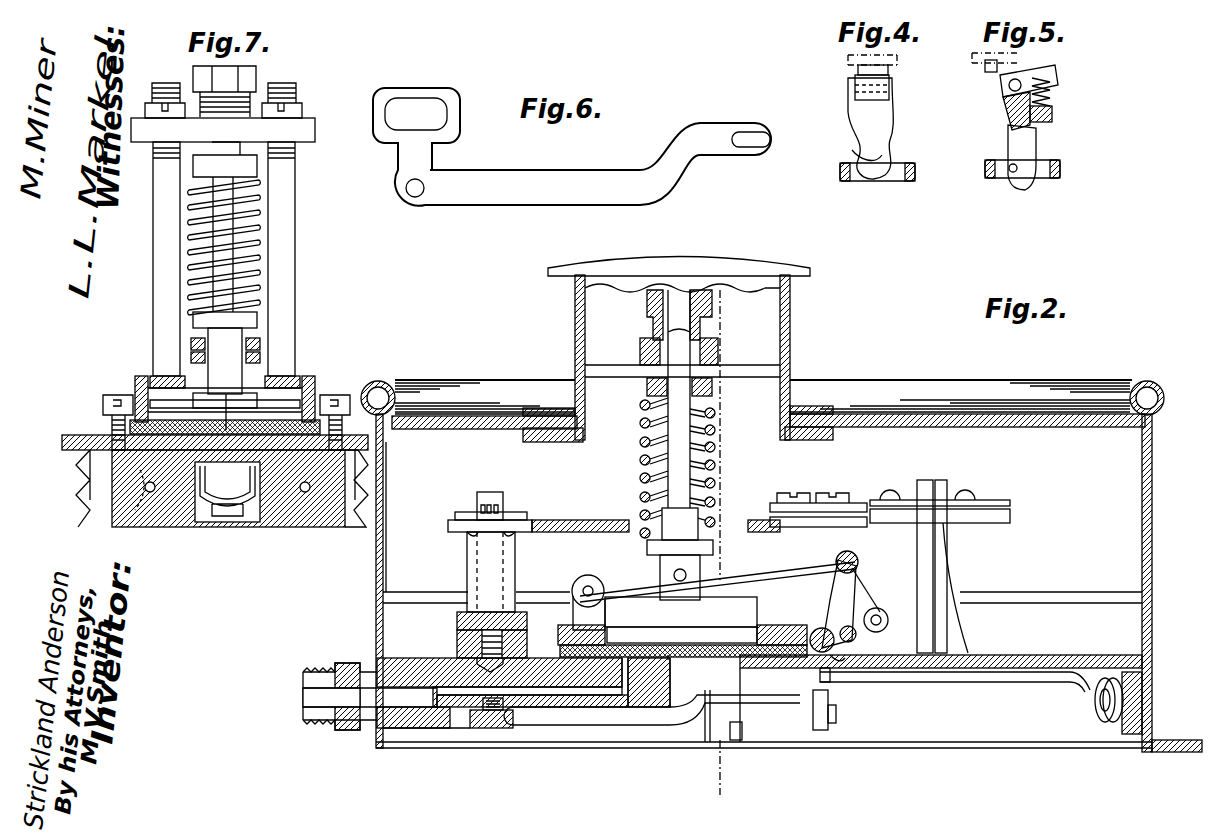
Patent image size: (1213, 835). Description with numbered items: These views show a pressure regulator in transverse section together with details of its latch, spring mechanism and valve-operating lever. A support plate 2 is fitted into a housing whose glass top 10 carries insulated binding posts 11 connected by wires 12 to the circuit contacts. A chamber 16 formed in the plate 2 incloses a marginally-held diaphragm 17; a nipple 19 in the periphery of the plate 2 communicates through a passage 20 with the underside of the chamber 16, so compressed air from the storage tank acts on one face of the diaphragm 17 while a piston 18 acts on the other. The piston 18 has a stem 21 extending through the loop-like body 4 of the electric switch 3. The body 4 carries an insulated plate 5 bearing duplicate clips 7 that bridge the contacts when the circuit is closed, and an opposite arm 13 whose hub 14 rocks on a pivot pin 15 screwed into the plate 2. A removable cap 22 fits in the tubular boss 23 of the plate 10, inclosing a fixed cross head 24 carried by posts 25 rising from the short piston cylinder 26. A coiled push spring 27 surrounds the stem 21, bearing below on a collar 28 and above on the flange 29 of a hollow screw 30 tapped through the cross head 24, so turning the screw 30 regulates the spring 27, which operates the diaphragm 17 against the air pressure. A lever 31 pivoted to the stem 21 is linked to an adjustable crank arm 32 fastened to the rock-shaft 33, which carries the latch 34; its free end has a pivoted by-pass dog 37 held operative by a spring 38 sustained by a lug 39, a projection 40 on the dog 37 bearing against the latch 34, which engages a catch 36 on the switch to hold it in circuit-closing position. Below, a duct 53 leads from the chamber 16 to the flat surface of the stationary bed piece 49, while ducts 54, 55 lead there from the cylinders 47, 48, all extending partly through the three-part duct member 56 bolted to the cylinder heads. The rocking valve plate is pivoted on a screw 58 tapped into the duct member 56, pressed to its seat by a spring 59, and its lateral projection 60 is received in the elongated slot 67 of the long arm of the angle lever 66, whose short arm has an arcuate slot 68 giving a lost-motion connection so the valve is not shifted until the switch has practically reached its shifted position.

In FIG. 2, the support plate 2 is at (1030, 655).
In FIG. 2, the electric switch 3 is at (929, 558).
In FIG. 4, the switch body 4 is at (975, 60).
In FIG. 5, the switch body 4 is at (972, 58).
In FIG. 2, the switch body 4 is at (577, 520).
In FIG. 2, the plate 5 is at (866, 503).
In FIG. 2, the clips 7 is at (985, 505).
In FIG. 2, the glass top 10 is at (885, 425).
In FIG. 2, the binding posts 11 is at (1098, 705).
In FIG. 2, the wires 12 is at (1030, 684).
In FIG. 2, the second arm 13 is at (452, 525).
In FIG. 2, the hub 14 is at (512, 566).
In FIG. 2, the pivot pin 15 is at (487, 498).
In FIG. 7, the diaphragm chamber 16 is at (280, 440).
In FIG. 2, the diaphragm chamber 16 is at (700, 657).
In FIG. 7, the diaphragm 17 is at (223, 402).
In FIG. 2, the diaphragm 17 is at (665, 660).
In FIG. 7, the piston 18 is at (275, 410).
In FIG. 2, the piston 18 is at (740, 735).
In FIG. 2, the nipple 19 is at (345, 730).
In FIG. 2, the passage 20 is at (460, 688).
In FIG. 7, the stem 21 is at (225, 361).
In FIG. 2, the stem 21 is at (680, 445).
In FIG. 2, the removable cap 22 is at (812, 272).
In FIG. 2, the tubular boss 23 is at (792, 382).
In FIG. 7, the cross head 24 is at (223, 130).
In FIG. 2, the cross head 24 is at (720, 350).
In FIG. 7, the posts 25 is at (153, 335).
In FIG. 7, the piston cylinder 26 is at (135, 392).
In FIG. 2, the piston cylinder 26 is at (682, 621).
In FIG. 7, the coiled push spring 27 is at (262, 256).
In FIG. 2, the coiled push spring 27 is at (716, 485).
In FIG. 7, the collar 28 is at (257, 318).
In FIG. 2, the collar 28 is at (713, 548).
In FIG. 7, the flange 29 is at (257, 168).
In FIG. 2, the flange 29 is at (714, 390).
In FIG. 7, the screw 30 is at (256, 80).
In FIG. 2, the screw 30 is at (700, 332).
In FIG. 7, the lever 31 is at (260, 356).
In FIG. 2, the lever 31 is at (713, 596).
In FIG. 2, the adjustable crank arm 32 is at (878, 611).
In FIG. 4, the rock-shaft 33 is at (895, 182).
In FIG. 5, the rock-shaft 33 is at (1045, 180).
In FIG. 2, the rock-shaft 33 is at (845, 656).
In FIG. 4, the latch 34 is at (870, 128).
In FIG. 5, the latch 34 is at (1025, 138).
In FIG. 2, the latch 34 is at (832, 601).
In FIG. 4, the catch 36 is at (858, 70).
In FIG. 5, the catch 36 is at (985, 72).
In FIG. 4, the by-pass dog 37 is at (890, 91).
In FIG. 5, the by-pass dog 37 is at (1060, 72).
In FIG. 5, the spring 38 is at (1052, 95).
In FIG. 5, the lug 39 is at (1054, 120).
In FIG. 5, the projection 40 is at (1005, 100).
In FIG. 7, the cylinder 47 is at (145, 505).
In FIG. 7, the cylinder 48 is at (318, 505).
In FIG. 2, the bed piece 49 is at (800, 732).
In FIG. 7, the duct 53 is at (157, 466).
In FIG. 7, the duct 54 is at (150, 495).
In FIG. 7, the duct 55 is at (305, 495).
In FIG. 2, the three-part duct member 56 is at (708, 735).
In FIG. 2, the pivot 58 is at (838, 724).
In FIG. 2, the spring 59 is at (813, 712).
In FIG. 2, the lateral projection 60 is at (828, 684).
In FIG. 7, the angle lever 66 is at (200, 520).
In FIG. 6, the angle lever 66 is at (572, 147).
In FIG. 2, the angle lever 66 is at (560, 726).
In FIG. 6, the elongated slot 67 is at (752, 141).
In FIG. 6, the arcuate slot 68 is at (416, 114).